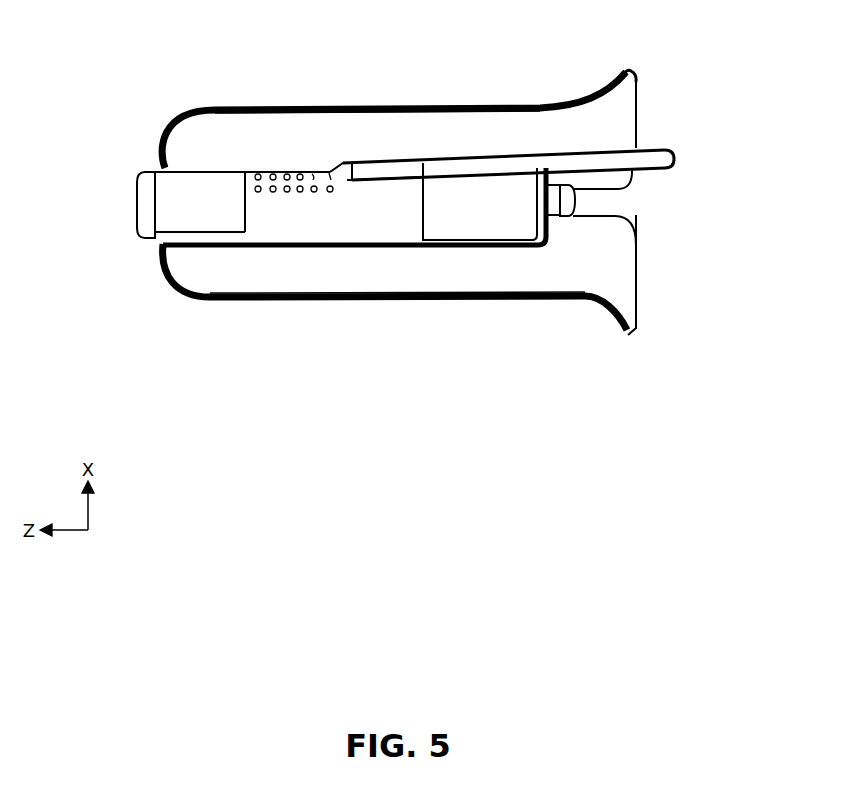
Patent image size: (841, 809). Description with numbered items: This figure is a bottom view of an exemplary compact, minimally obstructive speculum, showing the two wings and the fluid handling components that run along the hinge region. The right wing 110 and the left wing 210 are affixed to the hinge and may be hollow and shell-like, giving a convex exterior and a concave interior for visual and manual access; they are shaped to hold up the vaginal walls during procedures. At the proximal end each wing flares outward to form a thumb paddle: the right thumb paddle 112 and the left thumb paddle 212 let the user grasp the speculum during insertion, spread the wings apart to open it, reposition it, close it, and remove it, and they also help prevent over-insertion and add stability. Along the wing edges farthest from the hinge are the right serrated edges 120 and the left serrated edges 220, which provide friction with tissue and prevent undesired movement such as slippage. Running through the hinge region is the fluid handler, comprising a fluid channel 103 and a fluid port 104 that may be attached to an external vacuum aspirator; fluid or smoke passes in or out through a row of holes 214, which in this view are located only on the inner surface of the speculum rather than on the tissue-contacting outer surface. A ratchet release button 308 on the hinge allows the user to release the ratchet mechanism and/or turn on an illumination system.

The fluid channel 103 is at (392, 170).
The fluid port 104 is at (675, 157).
The right wing 110 is at (503, 272).
The right thumb paddle 112 is at (619, 293).
The right serrated edges 120 is at (437, 307).
The left wing 210 is at (497, 128).
The left thumb paddle 212 is at (620, 107).
The hole 214 is at (287, 175).
The left serrated edges 220 is at (442, 106).
The ratchet release button 308 is at (570, 200).